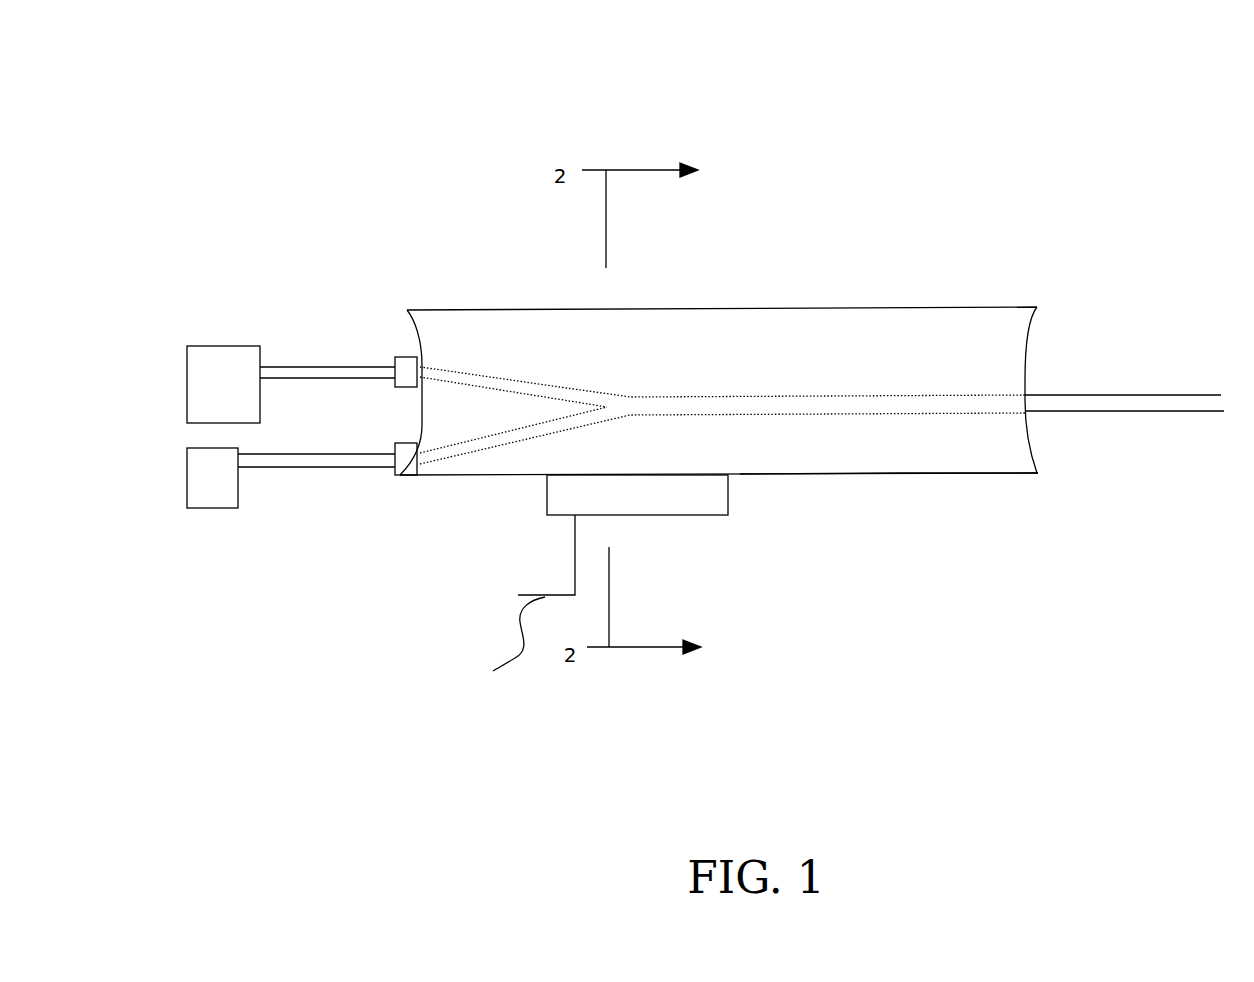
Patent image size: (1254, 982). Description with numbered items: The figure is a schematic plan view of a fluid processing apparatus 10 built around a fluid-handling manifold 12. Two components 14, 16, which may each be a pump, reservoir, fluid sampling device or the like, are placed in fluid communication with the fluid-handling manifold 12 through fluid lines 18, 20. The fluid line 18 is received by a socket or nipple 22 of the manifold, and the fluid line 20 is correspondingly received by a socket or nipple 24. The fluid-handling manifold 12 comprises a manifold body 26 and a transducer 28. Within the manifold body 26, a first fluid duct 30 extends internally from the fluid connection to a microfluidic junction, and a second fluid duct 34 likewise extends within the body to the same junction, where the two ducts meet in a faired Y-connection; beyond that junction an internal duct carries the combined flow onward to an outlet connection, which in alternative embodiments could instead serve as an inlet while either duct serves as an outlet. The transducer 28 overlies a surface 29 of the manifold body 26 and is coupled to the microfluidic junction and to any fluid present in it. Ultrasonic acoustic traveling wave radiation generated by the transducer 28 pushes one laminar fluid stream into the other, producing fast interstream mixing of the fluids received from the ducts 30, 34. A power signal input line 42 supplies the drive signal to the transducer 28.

The fluid processing apparatus 10 is at (905, 157).
The fluid-handling manifold 12 is at (1000, 307).
The component 14 is at (237, 368).
The component 16 is at (187, 502).
The fluid line 18 is at (297, 368).
The fluid line 20 is at (317, 453).
The socket or nipple 22 is at (407, 357).
The socket or nipple 24 is at (398, 473).
The manifold body 26 is at (942, 465).
The transducer 28 is at (680, 488).
The surface 29 is at (837, 473).
The first fluid duct 30 is at (502, 378).
The second fluid duct 34 is at (478, 460).
The power signal input line 42 is at (522, 606).